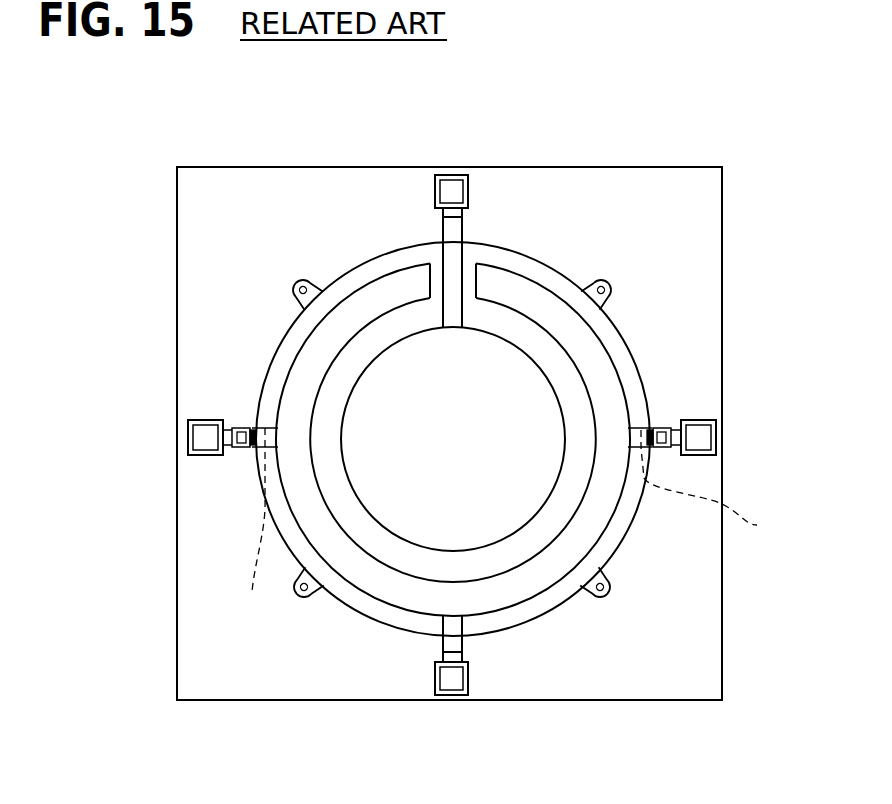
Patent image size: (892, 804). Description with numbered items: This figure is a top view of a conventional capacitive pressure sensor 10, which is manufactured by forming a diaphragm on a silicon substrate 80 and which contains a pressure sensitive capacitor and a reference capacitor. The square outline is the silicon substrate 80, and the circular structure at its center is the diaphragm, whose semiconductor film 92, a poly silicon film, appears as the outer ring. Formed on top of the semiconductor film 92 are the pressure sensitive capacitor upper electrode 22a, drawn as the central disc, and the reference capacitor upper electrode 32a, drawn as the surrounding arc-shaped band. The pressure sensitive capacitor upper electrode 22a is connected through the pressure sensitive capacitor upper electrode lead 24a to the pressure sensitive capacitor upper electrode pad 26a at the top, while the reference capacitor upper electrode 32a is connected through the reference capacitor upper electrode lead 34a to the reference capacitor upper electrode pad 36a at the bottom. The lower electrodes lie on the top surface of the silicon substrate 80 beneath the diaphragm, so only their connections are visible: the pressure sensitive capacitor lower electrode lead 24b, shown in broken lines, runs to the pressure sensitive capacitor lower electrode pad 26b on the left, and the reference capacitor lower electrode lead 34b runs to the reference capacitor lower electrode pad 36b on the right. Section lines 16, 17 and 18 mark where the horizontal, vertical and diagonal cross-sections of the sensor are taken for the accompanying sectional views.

The capacitive pressure sensor 10 is at (150, 182).
The silicon substrate 80 is at (215, 185).
The semiconductor film 92 is at (372, 609).
The pressure sensitive capacitor upper electrode 22a is at (506, 392).
The pressure sensitive capacitor upper electrode lead 24a is at (452, 293).
The reference capacitor upper electrode 32a is at (620, 405).
The pressure sensitive capacitor upper electrode pad 26a is at (444, 179).
The reference capacitor upper electrode pad 36a is at (445, 681).
The reference capacitor upper electrode lead 34a is at (455, 642).
The pressure sensitive capacitor lower electrode pad 26b is at (202, 432).
The reference capacitor lower electrode pad 36b is at (706, 433).
The pressure sensitive capacitor lower electrode lead 24b is at (250, 524).
The reference capacitor lower electrode lead 34b is at (721, 485).
The section line 16- 16 is at (166, 435).
The section line 17- 17 is at (458, 158).
The section line 18- 18 is at (728, 158).